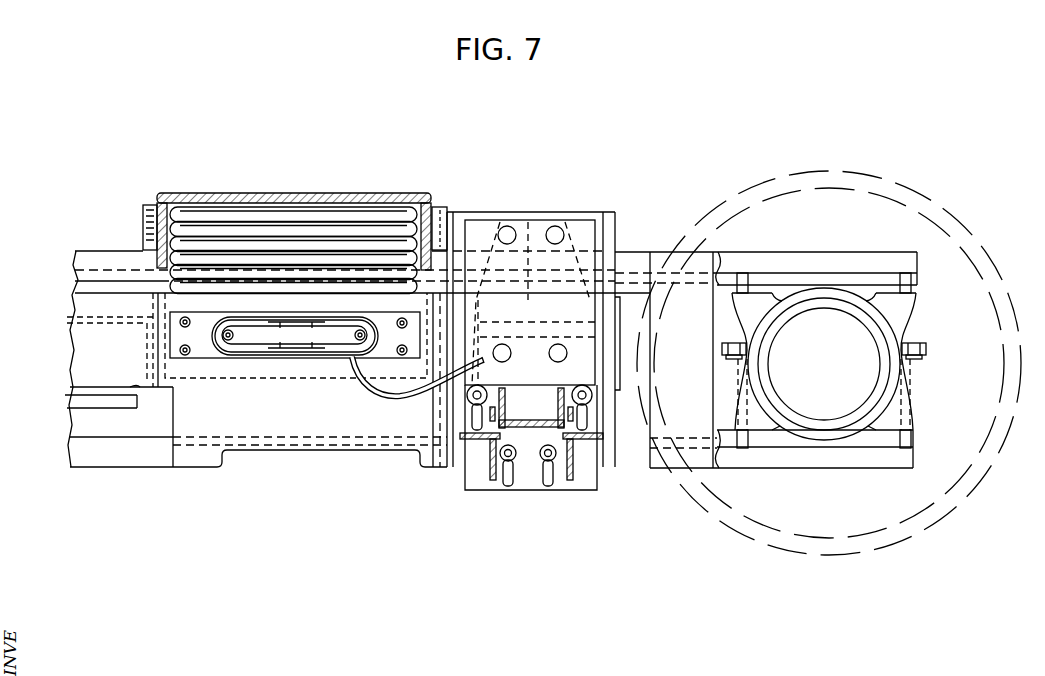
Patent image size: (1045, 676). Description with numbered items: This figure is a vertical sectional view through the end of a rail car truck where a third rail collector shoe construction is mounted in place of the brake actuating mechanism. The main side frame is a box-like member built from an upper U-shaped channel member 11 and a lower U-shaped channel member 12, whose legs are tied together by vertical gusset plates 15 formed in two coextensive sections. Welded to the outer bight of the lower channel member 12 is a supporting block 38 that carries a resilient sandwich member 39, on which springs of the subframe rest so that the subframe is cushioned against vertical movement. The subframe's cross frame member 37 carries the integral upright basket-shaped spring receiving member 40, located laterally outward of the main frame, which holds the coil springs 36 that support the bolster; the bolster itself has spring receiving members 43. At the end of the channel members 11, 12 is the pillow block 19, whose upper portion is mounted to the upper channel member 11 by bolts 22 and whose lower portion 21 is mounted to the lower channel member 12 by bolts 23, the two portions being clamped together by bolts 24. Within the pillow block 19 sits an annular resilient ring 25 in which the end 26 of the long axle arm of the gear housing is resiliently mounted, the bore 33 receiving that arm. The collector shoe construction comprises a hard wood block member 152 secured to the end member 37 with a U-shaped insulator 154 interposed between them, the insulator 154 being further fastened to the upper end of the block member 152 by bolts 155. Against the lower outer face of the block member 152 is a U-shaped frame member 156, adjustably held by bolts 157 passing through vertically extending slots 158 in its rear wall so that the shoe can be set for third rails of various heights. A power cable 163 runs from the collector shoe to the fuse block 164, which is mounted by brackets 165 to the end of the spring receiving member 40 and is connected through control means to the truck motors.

The upper U-shaped channel member 11 is at (106, 264).
The lower U-shaped channel member 12 is at (131, 455).
The gusset plates 15 is at (243, 428).
The pillow block 19 is at (912, 322).
The lower portion of pillow block 21 is at (858, 432).
The bolts 22 is at (746, 276).
The bolts 23 is at (738, 440).
The bolts 24 is at (724, 346).
The annular resilient ring 25 is at (831, 292).
The end of long axle arm 26 is at (803, 303).
The shaft bore 33 is at (851, 385).
The coil springs 36 is at (195, 215).
The cross frame member 37 is at (88, 307).
The supporting blocks 38 is at (120, 424).
The resilient sandwich members 39 is at (80, 389).
The spring receiving member 40 is at (266, 381).
The spring receiving members 43 is at (258, 196).
The block member 152 is at (580, 226).
The insulator 154 is at (613, 230).
The bolts 155 is at (555, 226).
The frame member 156 is at (556, 492).
The bolts 157 is at (574, 390).
The slots 158 is at (477, 420).
The power cable 163 is at (378, 392).
The fuse block 164 is at (383, 326).
The brackets 165 is at (178, 355).